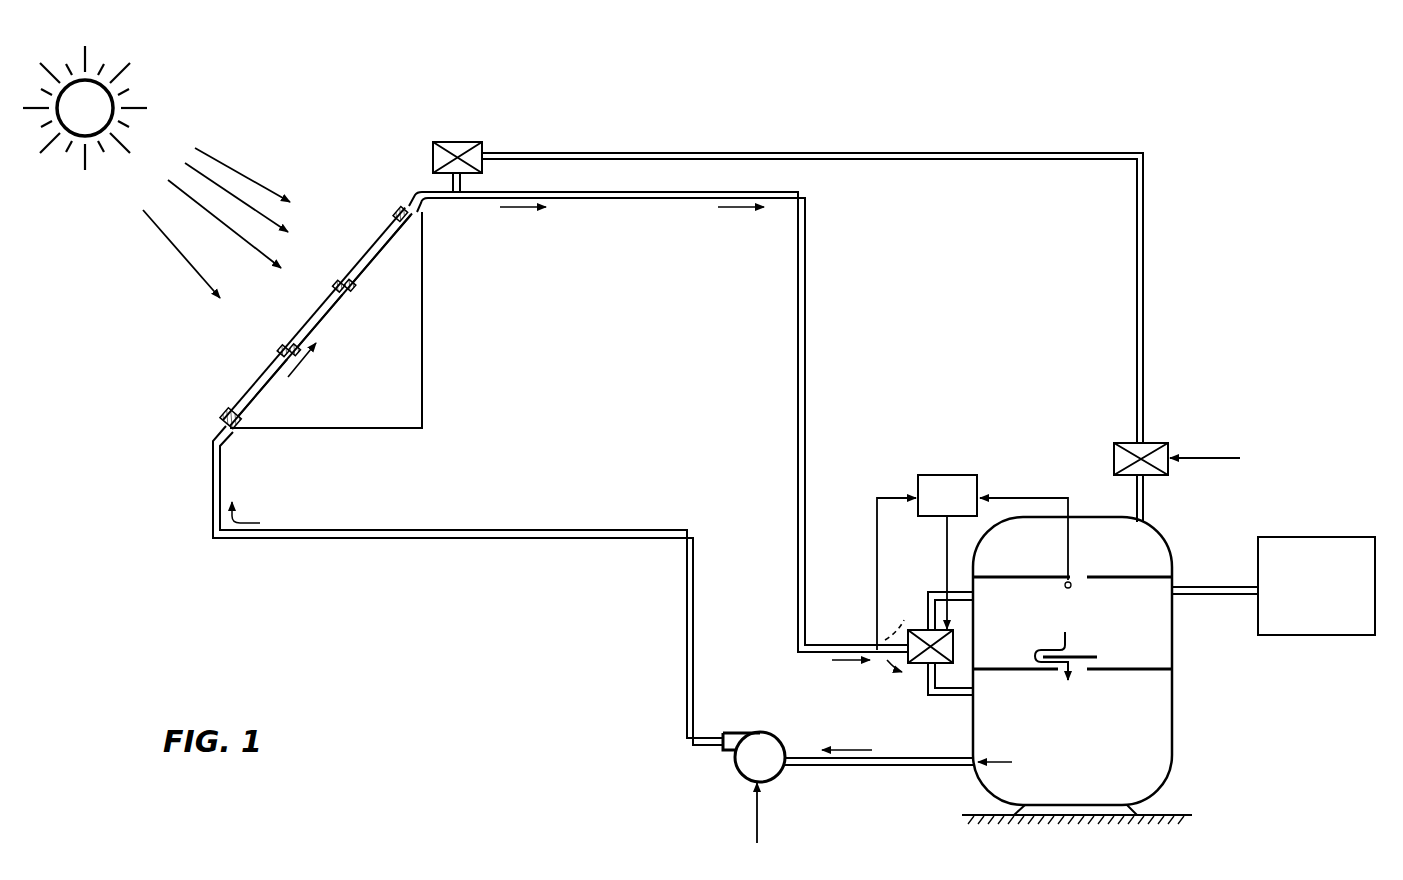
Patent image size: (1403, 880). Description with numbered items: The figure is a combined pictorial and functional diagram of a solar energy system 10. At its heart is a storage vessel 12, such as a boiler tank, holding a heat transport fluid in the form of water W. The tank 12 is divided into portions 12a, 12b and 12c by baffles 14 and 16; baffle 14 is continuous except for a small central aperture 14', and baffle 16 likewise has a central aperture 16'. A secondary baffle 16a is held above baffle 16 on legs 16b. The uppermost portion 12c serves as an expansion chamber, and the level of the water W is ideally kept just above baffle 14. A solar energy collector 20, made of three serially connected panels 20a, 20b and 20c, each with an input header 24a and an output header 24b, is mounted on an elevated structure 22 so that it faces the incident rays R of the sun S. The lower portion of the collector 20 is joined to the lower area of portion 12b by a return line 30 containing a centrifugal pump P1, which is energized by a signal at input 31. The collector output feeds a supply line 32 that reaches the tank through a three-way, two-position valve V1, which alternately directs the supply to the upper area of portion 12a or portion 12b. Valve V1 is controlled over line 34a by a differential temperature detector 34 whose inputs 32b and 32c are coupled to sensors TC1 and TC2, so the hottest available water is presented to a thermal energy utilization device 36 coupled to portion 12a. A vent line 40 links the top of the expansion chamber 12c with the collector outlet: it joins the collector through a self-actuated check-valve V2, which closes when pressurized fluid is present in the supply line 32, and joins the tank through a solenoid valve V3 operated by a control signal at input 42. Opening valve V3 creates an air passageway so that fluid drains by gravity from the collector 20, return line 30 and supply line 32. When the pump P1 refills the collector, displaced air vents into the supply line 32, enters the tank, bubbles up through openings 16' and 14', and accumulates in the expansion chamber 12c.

The solar energy system 10 is at (545, 623).
The storage vessel 12 is at (1176, 770).
The tank portion 12a is at (1132, 629).
The tank portion 12b is at (1129, 738).
The expansion chamber portion 12c is at (1118, 548).
The baffle 14 is at (999, 603).
The central aperture 14' is at (1127, 593).
The baffle 16 is at (993, 684).
The aperture 16' is at (1127, 687).
The secondary baffle 16a is at (1072, 656).
The legs 16b is at (1098, 662).
The solar energy collector 20 is at (282, 317).
The solar collector panel 20a is at (262, 387).
The solar collector panel 20b is at (319, 321).
The solar collector panel 20c is at (374, 256).
The elevated structure 22 is at (392, 428).
The input header 24a is at (230, 418).
The output header 24b is at (288, 350).
The return line 30 is at (878, 782).
The pump input 31 is at (758, 808).
The supply line 32 is at (784, 192).
The detector input 32b is at (896, 496).
The detector input 32c is at (1064, 496).
The differential temperature detector 34 is at (980, 442).
The output signal line 34a is at (946, 558).
The thermal energy utilization device 36 is at (1328, 514).
The vent line 40 is at (788, 150).
The control signal input 42 is at (1234, 460).
The three-way, two-position valve V1 is at (914, 668).
The check-valve V2 is at (497, 126).
The solenoid operated valve V3 is at (1124, 443).
The centrifugal pump P1 is at (754, 757).
The sensor TC1 is at (876, 652).
The sensor TC2 is at (1066, 592).
The water W is at (1162, 548).
The incident rays R is at (292, 196).
The sun S is at (85, 108).